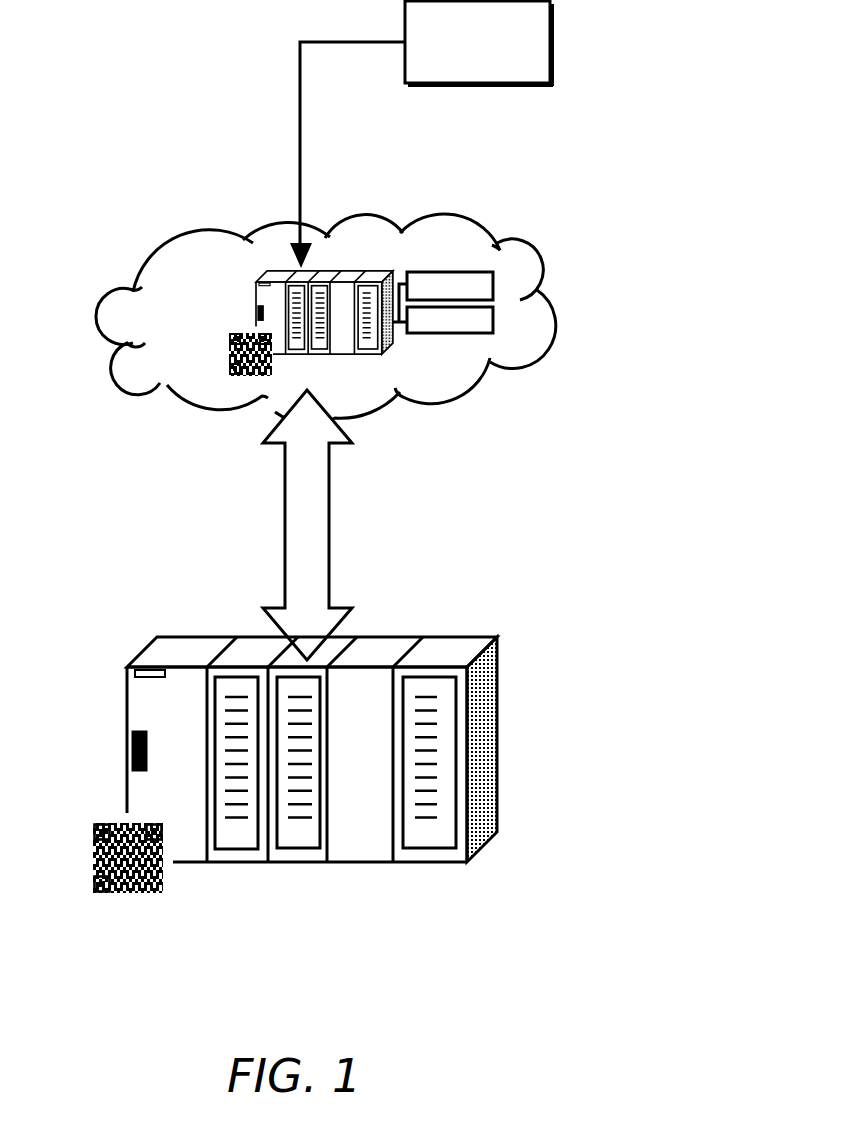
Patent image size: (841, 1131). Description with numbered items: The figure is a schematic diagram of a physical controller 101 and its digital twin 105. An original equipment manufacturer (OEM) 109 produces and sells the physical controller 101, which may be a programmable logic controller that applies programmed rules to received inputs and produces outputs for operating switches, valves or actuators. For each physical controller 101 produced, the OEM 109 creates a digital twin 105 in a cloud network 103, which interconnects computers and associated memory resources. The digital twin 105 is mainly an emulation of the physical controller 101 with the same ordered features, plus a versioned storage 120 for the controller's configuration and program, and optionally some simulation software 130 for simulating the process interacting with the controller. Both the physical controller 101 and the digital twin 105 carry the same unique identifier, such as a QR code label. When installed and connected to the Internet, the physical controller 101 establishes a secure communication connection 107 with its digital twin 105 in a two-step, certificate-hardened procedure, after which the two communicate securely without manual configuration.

The physical controller 101 is at (207, 636).
The cloud network 103 is at (187, 235).
The digital twin 105 is at (256, 302).
The secure communication connection 107 is at (284, 510).
The original equipment manufacturer (OEM) 109 is at (552, 40).
The versioned storage 120 is at (493, 281).
The simulation software 130 is at (493, 324).